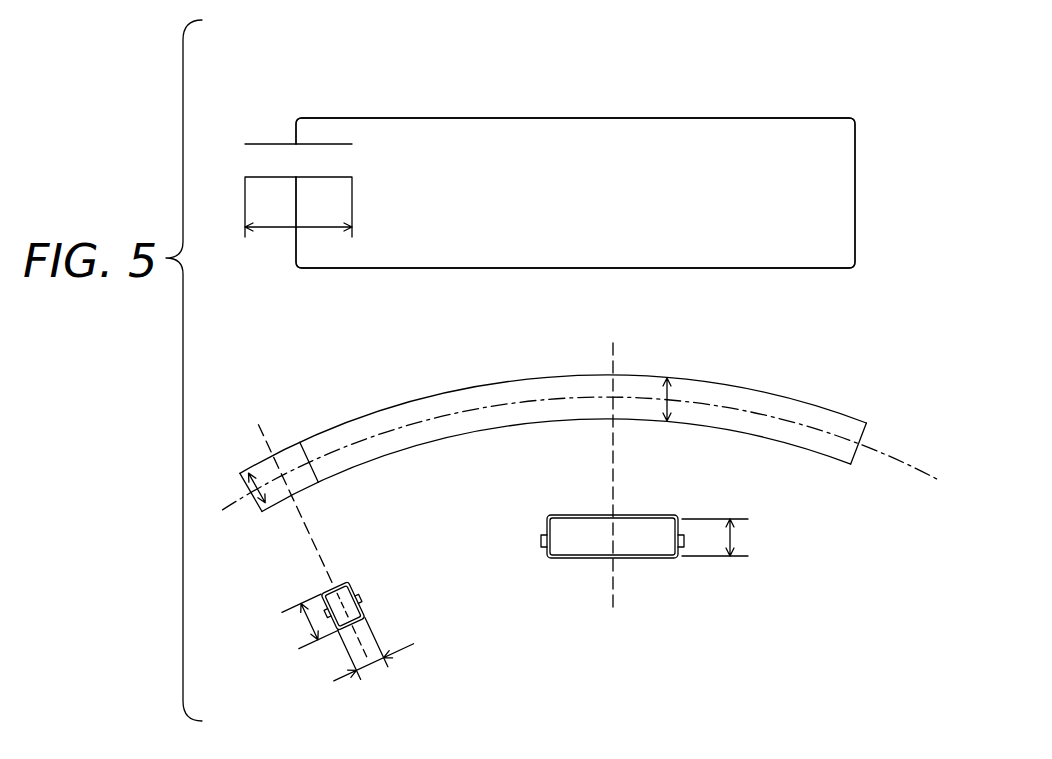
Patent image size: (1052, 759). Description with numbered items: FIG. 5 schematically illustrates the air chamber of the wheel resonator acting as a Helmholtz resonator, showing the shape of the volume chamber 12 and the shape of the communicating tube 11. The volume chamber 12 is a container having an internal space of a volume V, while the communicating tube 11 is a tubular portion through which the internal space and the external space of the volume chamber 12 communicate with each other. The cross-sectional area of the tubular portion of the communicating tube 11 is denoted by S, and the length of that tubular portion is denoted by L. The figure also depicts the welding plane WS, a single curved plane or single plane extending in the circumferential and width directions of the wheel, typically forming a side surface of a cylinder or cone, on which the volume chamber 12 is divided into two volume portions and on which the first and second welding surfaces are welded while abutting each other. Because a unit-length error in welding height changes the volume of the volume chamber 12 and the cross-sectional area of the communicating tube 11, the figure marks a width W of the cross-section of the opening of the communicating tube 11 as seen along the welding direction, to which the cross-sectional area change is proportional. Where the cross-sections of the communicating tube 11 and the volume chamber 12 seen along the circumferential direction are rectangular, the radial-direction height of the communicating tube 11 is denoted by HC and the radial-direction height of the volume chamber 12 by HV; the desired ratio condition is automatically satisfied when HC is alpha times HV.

The communicating tube 11 is at (275, 158).
The volume chamber 12 is at (517, 158).
The volume V is at (692, 148).
The length of the tubular portion L is at (298, 207).
The radial-direction height of the volume chamber HV is at (672, 400).
The radial-direction height of the communicating tube HC is at (248, 484).
The cross-sectional area S is at (340, 590).
The width of the cross-section of the opening W is at (366, 652).
The welding plane WS is at (912, 466).